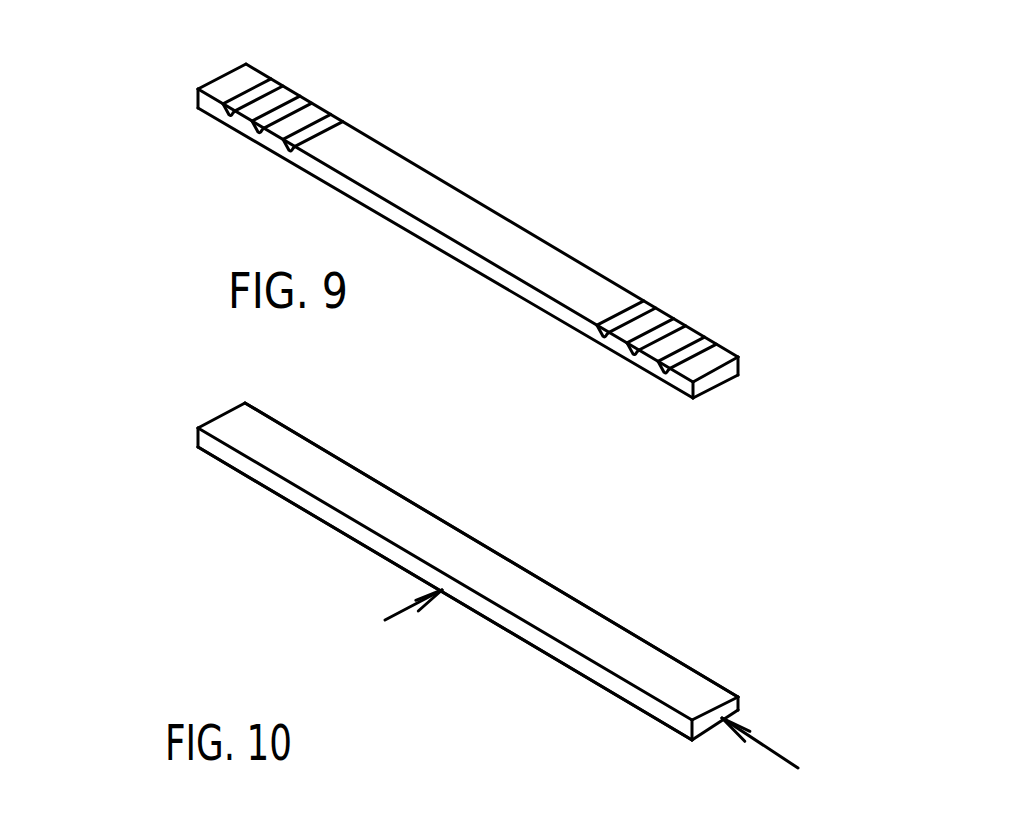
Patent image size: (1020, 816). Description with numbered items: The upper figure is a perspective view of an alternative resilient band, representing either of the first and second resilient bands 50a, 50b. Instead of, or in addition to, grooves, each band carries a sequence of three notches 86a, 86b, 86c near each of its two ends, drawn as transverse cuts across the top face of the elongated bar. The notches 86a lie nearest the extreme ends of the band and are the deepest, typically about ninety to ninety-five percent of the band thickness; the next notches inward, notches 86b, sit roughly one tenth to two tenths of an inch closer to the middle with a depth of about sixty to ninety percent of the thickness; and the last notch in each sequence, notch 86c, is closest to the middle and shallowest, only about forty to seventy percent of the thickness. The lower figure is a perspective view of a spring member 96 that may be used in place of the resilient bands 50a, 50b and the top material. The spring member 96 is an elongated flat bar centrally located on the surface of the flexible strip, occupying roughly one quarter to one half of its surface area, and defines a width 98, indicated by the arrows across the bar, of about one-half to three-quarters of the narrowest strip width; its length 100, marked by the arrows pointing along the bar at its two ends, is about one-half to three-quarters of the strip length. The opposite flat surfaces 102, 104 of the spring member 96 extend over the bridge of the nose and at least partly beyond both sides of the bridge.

In FIG. 9, the first resilient band 50a is at (468, 245).
In FIG. 9, the second resilient band 50b is at (558, 313).
In FIG. 9, the notches 86a is at (268, 88).
In FIG. 9, the notches 86b is at (250, 135).
In FIG. 9, the notch 86c is at (337, 118).
In FIG. 10, the spring member 96 is at (677, 680).
In FIG. 10, the width 98 is at (512, 560).
In FIG. 10, the length of strip 100 is at (217, 418).
In FIG. 10, the flat surface 102 is at (478, 613).
In FIG. 10, the flat surface 104 is at (588, 605).